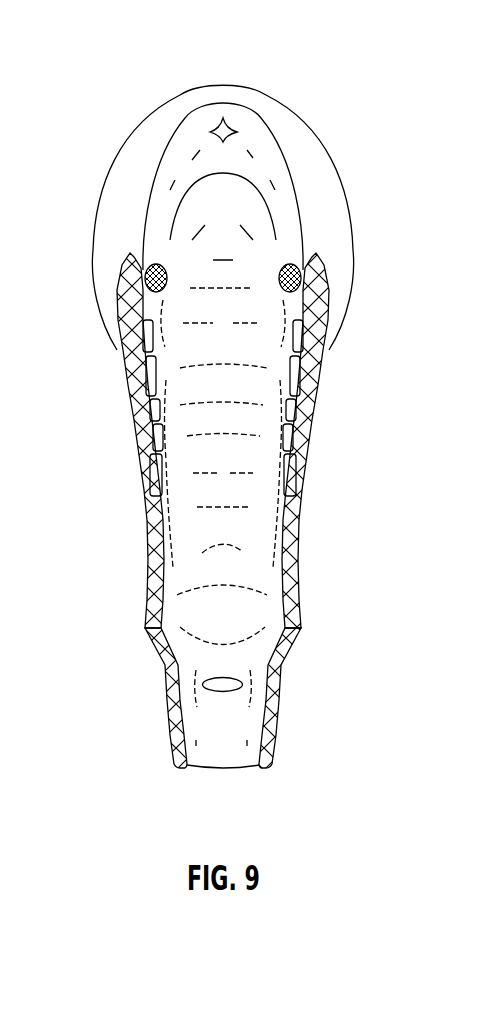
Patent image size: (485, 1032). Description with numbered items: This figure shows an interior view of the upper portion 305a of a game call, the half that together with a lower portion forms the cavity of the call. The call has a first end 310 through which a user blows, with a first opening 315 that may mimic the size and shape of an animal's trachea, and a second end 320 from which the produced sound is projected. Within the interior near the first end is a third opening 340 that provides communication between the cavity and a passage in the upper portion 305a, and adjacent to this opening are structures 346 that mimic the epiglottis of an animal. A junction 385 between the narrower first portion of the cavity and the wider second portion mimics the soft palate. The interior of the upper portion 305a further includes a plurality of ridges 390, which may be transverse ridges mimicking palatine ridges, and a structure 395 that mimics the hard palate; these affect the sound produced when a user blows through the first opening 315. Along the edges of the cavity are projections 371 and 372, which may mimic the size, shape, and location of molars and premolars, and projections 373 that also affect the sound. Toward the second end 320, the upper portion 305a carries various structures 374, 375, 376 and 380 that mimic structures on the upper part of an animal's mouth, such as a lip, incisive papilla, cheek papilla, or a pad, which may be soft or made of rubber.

The upper portion 305a is at (120, 132).
The first end 310 is at (198, 780).
The first opening 315 is at (220, 757).
The second end 320 is at (210, 67).
The third opening 340 is at (223, 687).
The structures 346 is at (262, 677).
The projections 371 is at (137, 450).
The projections 372 is at (128, 385).
The projections 373 is at (143, 278).
The structure 374 is at (113, 205).
The structure 375 is at (223, 117).
The structure 376 is at (287, 212).
The structure 380 is at (248, 130).
The junction 385 is at (177, 648).
The ridges 390 is at (213, 550).
The structure 395 is at (220, 447).